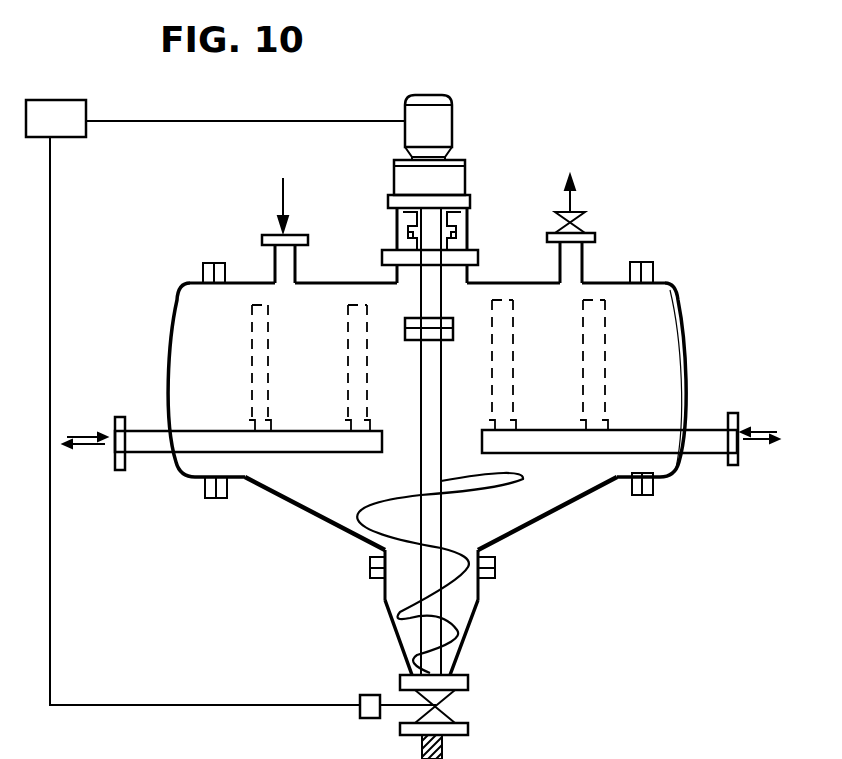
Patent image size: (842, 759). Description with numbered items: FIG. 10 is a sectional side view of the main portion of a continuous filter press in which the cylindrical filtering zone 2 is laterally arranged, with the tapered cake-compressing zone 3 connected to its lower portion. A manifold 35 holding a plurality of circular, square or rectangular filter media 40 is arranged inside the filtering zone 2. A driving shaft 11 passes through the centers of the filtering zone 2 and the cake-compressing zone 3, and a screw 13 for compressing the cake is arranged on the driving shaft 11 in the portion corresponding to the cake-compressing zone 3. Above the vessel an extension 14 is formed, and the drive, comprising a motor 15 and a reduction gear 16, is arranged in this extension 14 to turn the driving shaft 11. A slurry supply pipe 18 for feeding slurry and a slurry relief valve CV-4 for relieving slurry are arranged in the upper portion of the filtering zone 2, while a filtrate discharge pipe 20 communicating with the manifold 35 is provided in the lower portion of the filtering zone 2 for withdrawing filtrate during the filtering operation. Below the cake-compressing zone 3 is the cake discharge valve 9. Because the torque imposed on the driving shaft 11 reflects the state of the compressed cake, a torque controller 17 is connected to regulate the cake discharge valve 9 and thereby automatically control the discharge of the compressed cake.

The filtering zone 2 is at (681, 300).
The cake-compressing zone 3 is at (475, 615).
The cake discharge valve 9 is at (450, 705).
The driving shaft 11 is at (420, 302).
The screw 13 is at (405, 625).
The extension 14 is at (470, 225).
The motor 15 is at (452, 118).
The reduction gear 16 is at (465, 175).
The torque controller 17 is at (68, 100).
The slurry supply pipe 18 is at (290, 232).
The filtrate discharge pipe 20 is at (115, 433).
The manifold 35 is at (300, 455).
The filter media 40 is at (248, 343).
The slurry relief valve CV-4 is at (580, 225).